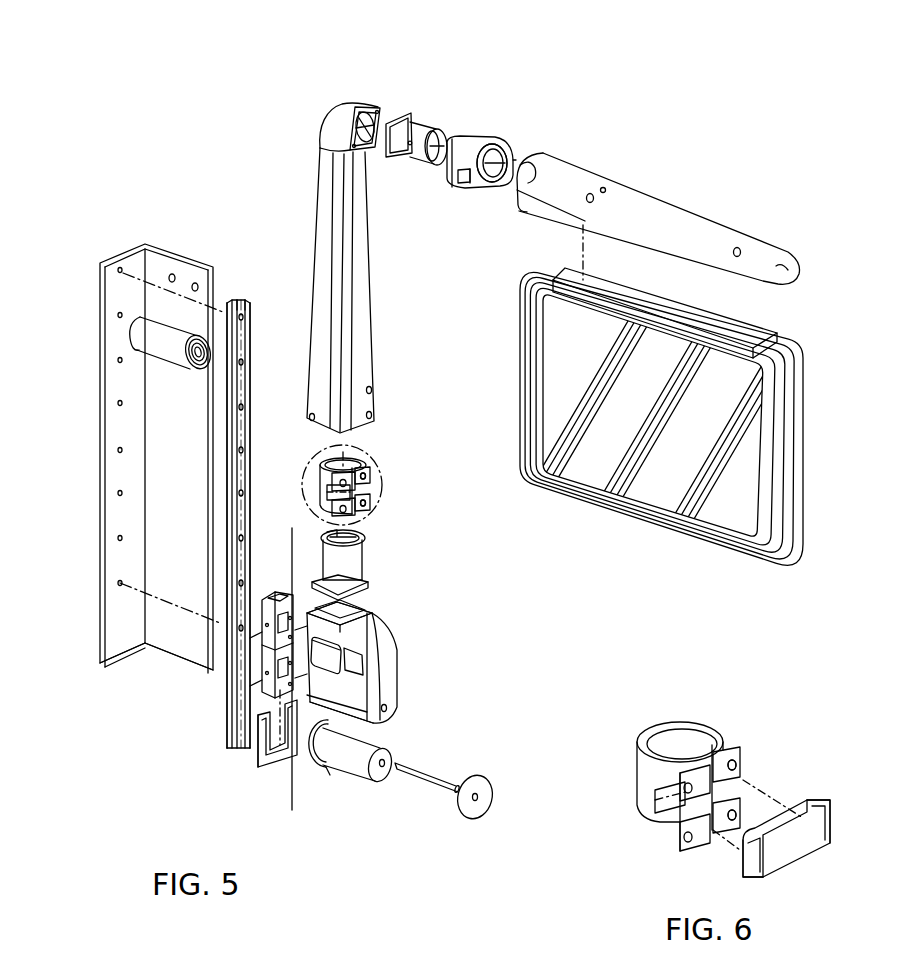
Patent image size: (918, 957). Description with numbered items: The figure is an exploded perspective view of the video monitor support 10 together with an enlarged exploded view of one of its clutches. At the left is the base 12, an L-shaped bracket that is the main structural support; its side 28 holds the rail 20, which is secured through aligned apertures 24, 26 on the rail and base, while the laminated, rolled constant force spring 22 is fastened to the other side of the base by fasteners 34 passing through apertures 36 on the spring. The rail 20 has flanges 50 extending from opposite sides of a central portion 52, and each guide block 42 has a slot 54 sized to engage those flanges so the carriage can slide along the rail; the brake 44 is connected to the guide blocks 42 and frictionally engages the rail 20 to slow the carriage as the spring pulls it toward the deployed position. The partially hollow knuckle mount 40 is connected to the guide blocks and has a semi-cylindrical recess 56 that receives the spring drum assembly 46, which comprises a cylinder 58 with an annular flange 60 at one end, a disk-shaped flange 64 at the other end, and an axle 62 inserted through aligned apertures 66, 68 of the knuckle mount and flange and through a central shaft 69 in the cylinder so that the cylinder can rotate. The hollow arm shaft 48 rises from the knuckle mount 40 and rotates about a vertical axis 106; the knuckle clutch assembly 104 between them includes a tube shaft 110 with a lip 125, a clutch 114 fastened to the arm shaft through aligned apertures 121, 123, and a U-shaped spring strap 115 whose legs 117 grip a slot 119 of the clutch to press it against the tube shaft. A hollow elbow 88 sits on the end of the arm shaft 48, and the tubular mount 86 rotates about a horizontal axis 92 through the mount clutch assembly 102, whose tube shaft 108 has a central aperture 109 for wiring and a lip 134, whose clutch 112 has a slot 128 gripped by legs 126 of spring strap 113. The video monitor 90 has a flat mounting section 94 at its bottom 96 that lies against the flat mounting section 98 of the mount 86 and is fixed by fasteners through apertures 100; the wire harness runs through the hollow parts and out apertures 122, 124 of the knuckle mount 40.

In FIG. 5, the video monitor support 10 is at (184, 84).
In FIG. 5, the base 12 is at (99, 383).
In FIG. 5, the rail 20 is at (251, 355).
In FIG. 5, the constant force spring 22 is at (170, 355).
In FIG. 5, the apertures 24 is at (243, 407).
In FIG. 5, the apertures 26 is at (118, 405).
In FIG. 5, the side 28 is at (125, 653).
In FIG. 5, the fasteners 34 is at (196, 282).
In FIG. 5, the apertures 36 is at (171, 273).
In FIG. 5, the knuckle mount 40 is at (398, 655).
In FIG. 5, the guide blocks 42 is at (292, 528).
In FIG. 5, the brake 44 is at (274, 765).
In FIG. 5, the spring drum assembly 46 is at (386, 785).
In FIG. 5, the arm shaft 48 is at (373, 304).
In FIG. 5, the flanges 50 is at (251, 320).
In FIG. 5, the central portion 52 is at (240, 300).
In FIG. 5, the slot 54 is at (274, 588).
In FIG. 5, the semi-cylindrical recess 56 is at (357, 721).
In FIG. 5, the cylinder 58 is at (353, 777).
In FIG. 5, the annular flange 60 is at (330, 768).
In FIG. 5, the axle 62 is at (447, 778).
In FIG. 5, the disk-shaped flange 64 is at (490, 787).
In FIG. 5, the aperture 66 is at (387, 706).
In FIG. 5, the aperture 68 is at (477, 800).
In FIG. 5, the central shaft 69 is at (386, 763).
In FIG. 5, the mount 86 is at (652, 210).
In FIG. 5, the elbow 88 is at (350, 104).
In FIG. 5, the video monitor 90 is at (805, 432).
In FIG. 5, the horizontal axis 92 is at (514, 162).
In FIG. 5, the flat mounting section 94 is at (750, 327).
In FIG. 5, the bottom 96 is at (788, 333).
In FIG. 5, the flat mounting section 98 is at (697, 268).
In FIG. 5, the apertures 100 is at (603, 187).
In FIG. 5, the mount clutch assembly 102 is at (420, 88).
In FIG. 5, the knuckle clutch assembly 104 is at (390, 529).
In FIG. 5, the vertical axis 106 is at (344, 455).
In FIG. 5, the tube shaft 108 is at (410, 166).
In FIG. 5, the central aperture 109 is at (440, 140).
In FIG. 5, the tube shaft 110 is at (364, 562).
In FIG. 5, the clutch 112 is at (472, 190).
In FIG. 5, the spring strap 113 is at (462, 184).
In FIG. 5, the clutch 114 is at (364, 470).
In FIG. 6, the clutch 114 is at (732, 737).
In FIG. 5, the spring strap 115 is at (327, 496).
In FIG. 6, the spring strap 115 is at (831, 821).
In FIG. 6, the legs 117 is at (812, 806).
In FIG. 6, the slot 119 is at (665, 820).
In FIG. 5, the apertures 121 is at (372, 413).
In FIG. 5, the aperture 122 is at (362, 607).
In FIG. 5, the apertures 123 is at (367, 475).
In FIG. 6, the apertures 123 is at (736, 810).
In FIG. 5, the aperture 124 is at (340, 655).
In FIG. 5, the lip 125 is at (347, 540).
In FIG. 5, the legs 126 is at (468, 184).
In FIG. 5, the slot 128 is at (494, 147).
In FIG. 5, the lip 134 is at (445, 130).